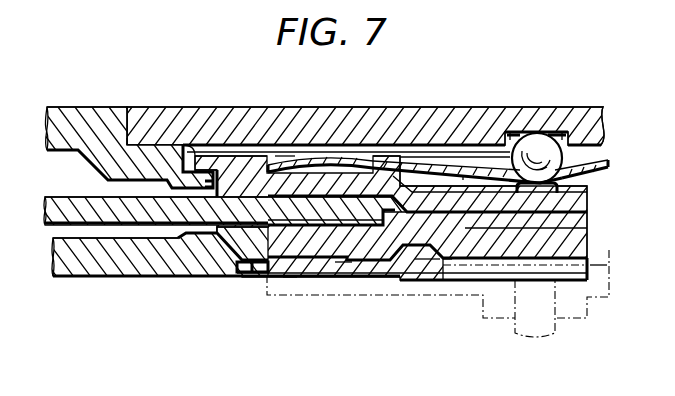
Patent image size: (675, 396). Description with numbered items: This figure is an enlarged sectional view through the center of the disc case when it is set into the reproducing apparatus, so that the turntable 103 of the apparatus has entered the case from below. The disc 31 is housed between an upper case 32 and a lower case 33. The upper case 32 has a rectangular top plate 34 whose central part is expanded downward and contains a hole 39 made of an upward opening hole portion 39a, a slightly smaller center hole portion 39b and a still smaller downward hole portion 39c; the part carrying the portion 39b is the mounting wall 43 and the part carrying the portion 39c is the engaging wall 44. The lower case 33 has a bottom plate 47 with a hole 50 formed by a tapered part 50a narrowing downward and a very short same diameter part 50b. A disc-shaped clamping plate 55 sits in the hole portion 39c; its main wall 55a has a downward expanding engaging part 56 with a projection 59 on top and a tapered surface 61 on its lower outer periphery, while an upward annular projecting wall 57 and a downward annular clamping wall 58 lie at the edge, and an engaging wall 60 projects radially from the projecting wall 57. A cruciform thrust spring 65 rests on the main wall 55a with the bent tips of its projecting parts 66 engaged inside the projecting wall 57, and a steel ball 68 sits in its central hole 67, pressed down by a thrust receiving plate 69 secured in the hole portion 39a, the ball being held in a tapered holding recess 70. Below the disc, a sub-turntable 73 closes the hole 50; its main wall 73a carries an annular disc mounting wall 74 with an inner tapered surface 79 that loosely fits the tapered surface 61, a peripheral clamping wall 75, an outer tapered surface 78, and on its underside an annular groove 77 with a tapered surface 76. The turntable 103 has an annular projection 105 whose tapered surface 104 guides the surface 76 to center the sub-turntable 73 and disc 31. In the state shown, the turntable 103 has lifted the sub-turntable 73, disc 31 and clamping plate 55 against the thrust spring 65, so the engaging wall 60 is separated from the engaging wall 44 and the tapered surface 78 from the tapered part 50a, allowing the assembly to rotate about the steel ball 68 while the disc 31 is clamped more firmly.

The disc 31 is at (66, 198).
The upper case 32 is at (66, 107).
The lower case 33 is at (70, 278).
The top plate 34 is at (99, 107).
The hole 39 is at (161, 107).
The upward opening hole portion 39a is at (136, 145).
The center hole portion 39b is at (186, 150).
The downward hole portion 39c is at (225, 178).
The mounting wall 43 is at (150, 163).
The engaging wall 44 is at (207, 190).
The bottom plate 47 is at (103, 278).
The hole 50 is at (243, 278).
The tapered part 50a is at (183, 278).
The same diameter part 50b is at (238, 278).
The clamping plate 55 is at (463, 181).
The main wall 55a is at (362, 152).
The engaging part 56 is at (437, 186).
The projecting wall 57 is at (283, 155).
The clamping wall 58 is at (255, 277).
The projection 59 is at (600, 163).
The engaging wall 60 is at (218, 152).
The tapered surface 61 is at (405, 190).
The thrust spring 65 is at (487, 172).
The projecting part 66 is at (333, 164).
The hole 67 is at (552, 195).
The steel ball 68 is at (523, 132).
The thrust receiving plate 69 is at (417, 152).
The holding recess 70 is at (561, 142).
The sub-turntable 73 is at (367, 280).
The main wall 73a is at (345, 262).
The disc mounting wall 74 is at (381, 280).
The clamping wall 75 is at (290, 286).
The tapered surface 76 is at (432, 262).
The annular groove 77 is at (447, 262).
The tapered surface 78 is at (186, 278).
The tapered surface 79 is at (450, 270).
The turntable 103 is at (609, 250).
The tapered surface 104 is at (420, 262).
The annular projection 105 is at (455, 318).